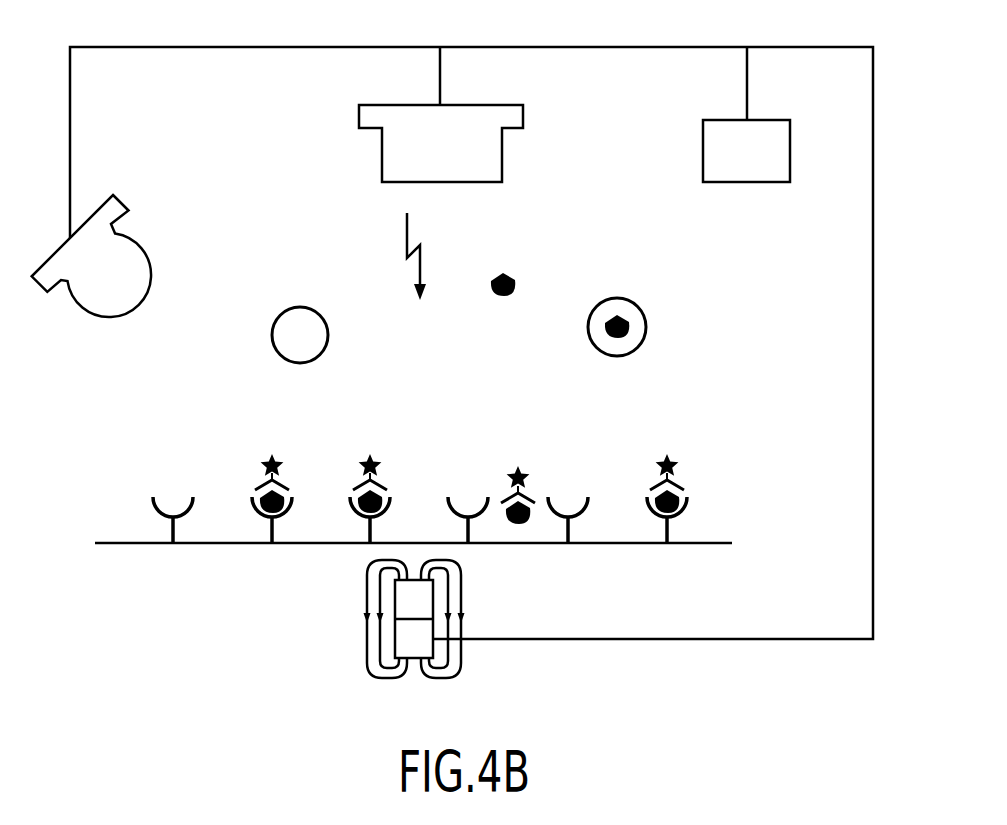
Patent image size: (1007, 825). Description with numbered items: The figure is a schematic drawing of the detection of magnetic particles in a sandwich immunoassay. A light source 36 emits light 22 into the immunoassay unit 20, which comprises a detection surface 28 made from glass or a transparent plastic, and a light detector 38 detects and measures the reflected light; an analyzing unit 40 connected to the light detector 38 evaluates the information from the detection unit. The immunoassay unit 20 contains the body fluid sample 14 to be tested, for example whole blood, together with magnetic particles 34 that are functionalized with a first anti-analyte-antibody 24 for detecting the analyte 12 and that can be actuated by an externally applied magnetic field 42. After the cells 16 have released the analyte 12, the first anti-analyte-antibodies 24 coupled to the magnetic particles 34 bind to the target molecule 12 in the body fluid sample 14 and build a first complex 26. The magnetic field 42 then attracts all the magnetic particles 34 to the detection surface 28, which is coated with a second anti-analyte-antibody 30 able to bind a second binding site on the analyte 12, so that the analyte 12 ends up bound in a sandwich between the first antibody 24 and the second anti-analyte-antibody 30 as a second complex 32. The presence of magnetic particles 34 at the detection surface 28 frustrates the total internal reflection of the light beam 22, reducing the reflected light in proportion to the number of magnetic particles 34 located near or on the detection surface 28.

The analyte 12 is at (517, 282).
The body fluid sample 14 is at (750, 408).
The cells 16 is at (328, 335).
The immunoassay unit 20 is at (118, 478).
The excitation light 22 is at (420, 250).
The first anti-analyte-antibody 24 is at (388, 492).
The first complex 26 is at (490, 476).
The detection surface 28 is at (625, 543).
The second anti-analyte-antibody 30 is at (668, 525).
The second complex 32 is at (659, 473).
The magnetic particles 34 is at (663, 453).
The light source 36 is at (80, 303).
The light detector 38 is at (502, 153).
The analyzing unit 40 is at (790, 150).
The magnetic field 42 is at (412, 658).